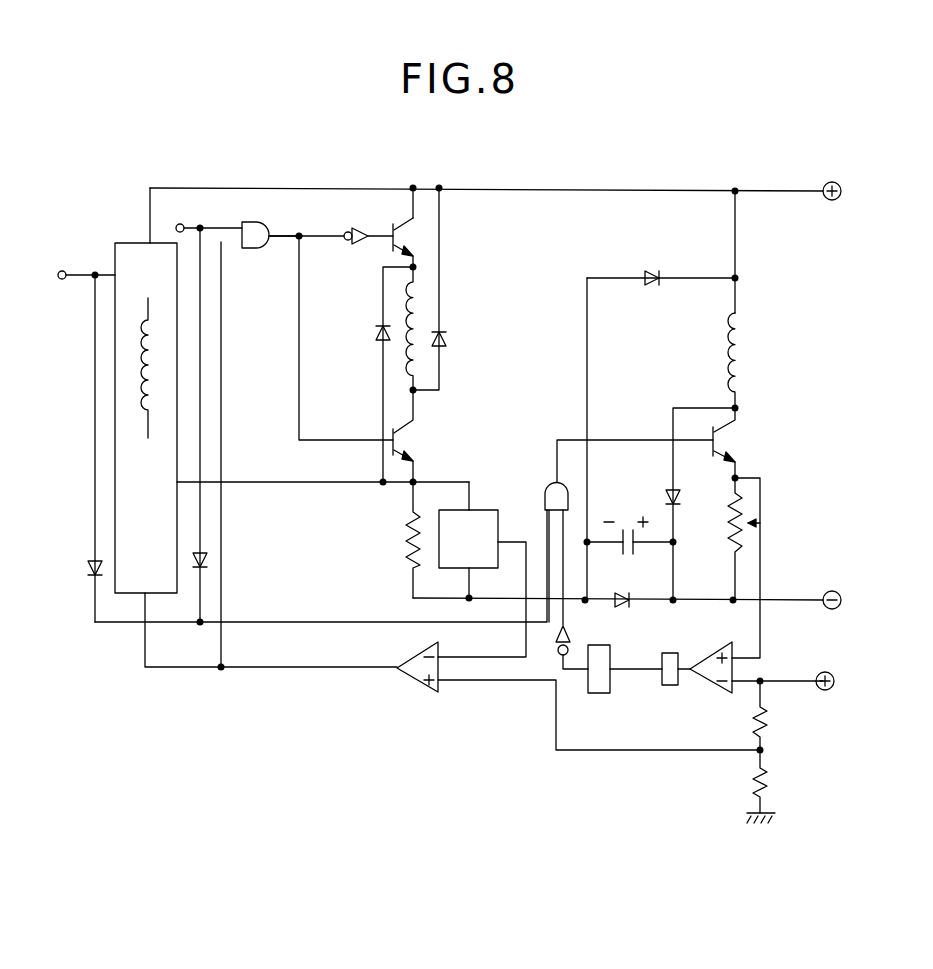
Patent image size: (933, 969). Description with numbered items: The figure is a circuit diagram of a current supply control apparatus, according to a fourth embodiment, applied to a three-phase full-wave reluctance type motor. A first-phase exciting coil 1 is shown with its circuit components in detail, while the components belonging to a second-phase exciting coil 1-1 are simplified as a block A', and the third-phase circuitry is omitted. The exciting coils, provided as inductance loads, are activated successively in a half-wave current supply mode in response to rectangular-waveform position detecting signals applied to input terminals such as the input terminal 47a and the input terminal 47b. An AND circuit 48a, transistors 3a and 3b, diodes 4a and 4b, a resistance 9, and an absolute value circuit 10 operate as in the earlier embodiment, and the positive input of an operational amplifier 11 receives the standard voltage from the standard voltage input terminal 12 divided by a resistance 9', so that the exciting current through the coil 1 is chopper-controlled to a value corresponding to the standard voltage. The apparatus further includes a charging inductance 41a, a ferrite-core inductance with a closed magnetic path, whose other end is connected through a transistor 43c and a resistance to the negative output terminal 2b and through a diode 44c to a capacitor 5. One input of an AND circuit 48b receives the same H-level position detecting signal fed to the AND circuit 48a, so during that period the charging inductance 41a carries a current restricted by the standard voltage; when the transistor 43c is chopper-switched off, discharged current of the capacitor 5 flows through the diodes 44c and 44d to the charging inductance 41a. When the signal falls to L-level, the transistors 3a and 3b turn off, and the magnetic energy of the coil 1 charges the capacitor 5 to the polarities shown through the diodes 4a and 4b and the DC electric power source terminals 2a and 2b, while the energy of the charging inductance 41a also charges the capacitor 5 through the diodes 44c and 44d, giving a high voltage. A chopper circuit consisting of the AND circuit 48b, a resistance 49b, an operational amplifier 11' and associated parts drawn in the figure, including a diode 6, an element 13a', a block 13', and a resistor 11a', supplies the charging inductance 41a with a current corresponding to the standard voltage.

The input terminal 47b is at (57, 279).
The input terminal 47a is at (180, 208).
The AND circuit 48a is at (248, 208).
The transistor 3a is at (398, 224).
The first-phase exciting coil 1 is at (415, 318).
The diode 4b is at (378, 330).
The diode 4a is at (447, 338).
The block A' is at (113, 418).
The second-phase exciting coil 1-1 is at (148, 355).
The transistor 3b is at (415, 440).
The resistance 9 is at (390, 540).
The absolute value circuit 10 is at (478, 510).
The AND circuit 48b is at (550, 483).
The diode 44d is at (652, 270).
The charging inductance 41a is at (745, 348).
The transistor 43c is at (738, 440).
The diode 44c is at (668, 492).
The resistance 49b is at (762, 523).
The capacitor 5 is at (623, 548).
The diode 6 is at (620, 606).
The light emitting element 13a' is at (539, 680).
The circuit block 13' is at (625, 692).
The resistor 11a' is at (695, 655).
The operational amplifier 11' is at (713, 690).
The operational amplifier 11 is at (415, 687).
The resistance 9' is at (787, 747).
The standard voltage input terminal 12 is at (835, 681).
The DC electric power source 2a is at (842, 191).
The negative output terminal 2b is at (842, 600).